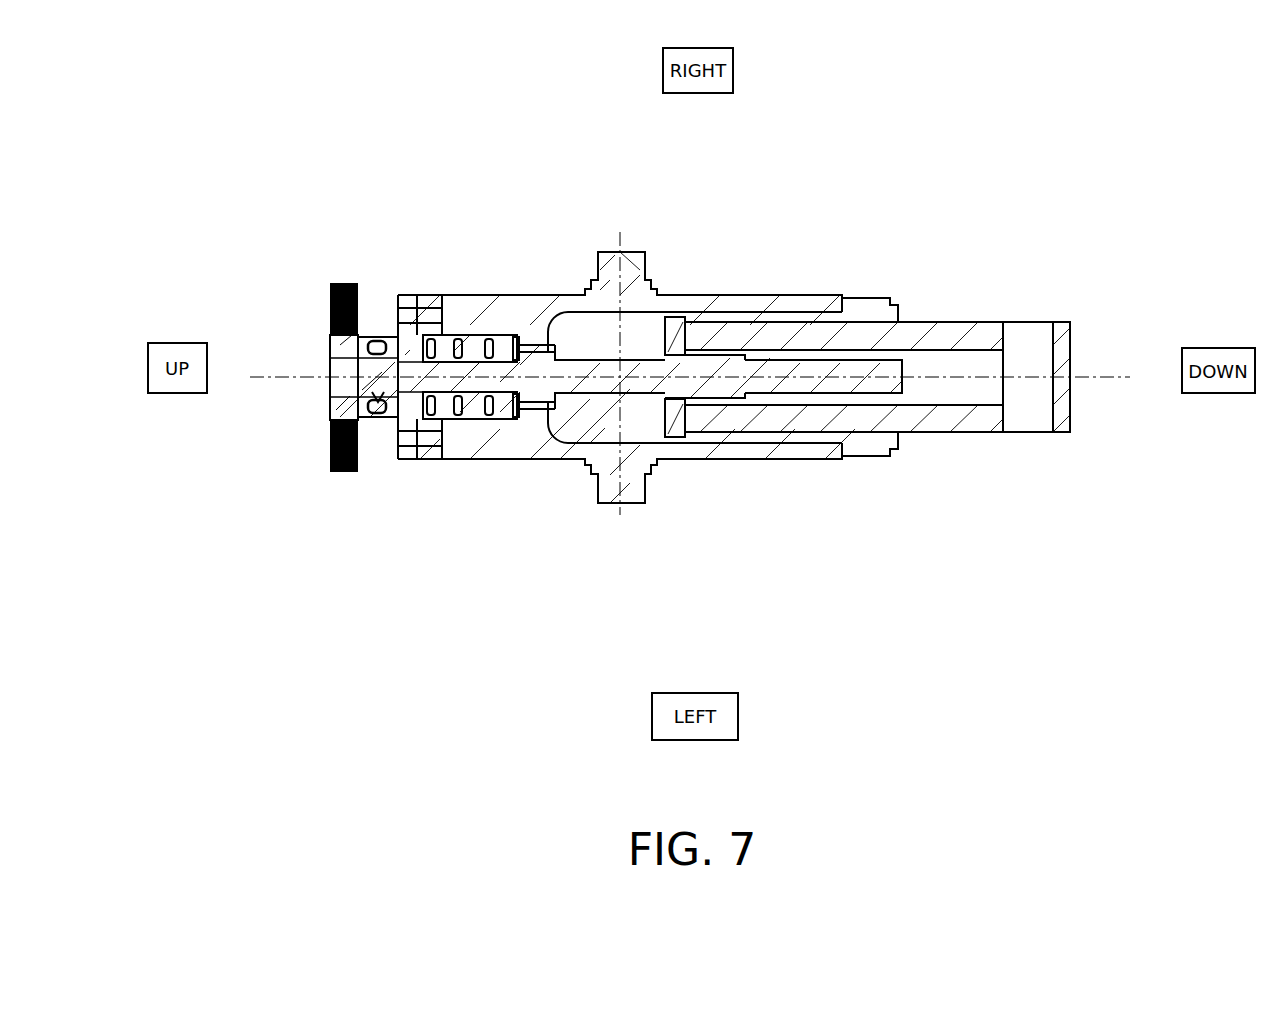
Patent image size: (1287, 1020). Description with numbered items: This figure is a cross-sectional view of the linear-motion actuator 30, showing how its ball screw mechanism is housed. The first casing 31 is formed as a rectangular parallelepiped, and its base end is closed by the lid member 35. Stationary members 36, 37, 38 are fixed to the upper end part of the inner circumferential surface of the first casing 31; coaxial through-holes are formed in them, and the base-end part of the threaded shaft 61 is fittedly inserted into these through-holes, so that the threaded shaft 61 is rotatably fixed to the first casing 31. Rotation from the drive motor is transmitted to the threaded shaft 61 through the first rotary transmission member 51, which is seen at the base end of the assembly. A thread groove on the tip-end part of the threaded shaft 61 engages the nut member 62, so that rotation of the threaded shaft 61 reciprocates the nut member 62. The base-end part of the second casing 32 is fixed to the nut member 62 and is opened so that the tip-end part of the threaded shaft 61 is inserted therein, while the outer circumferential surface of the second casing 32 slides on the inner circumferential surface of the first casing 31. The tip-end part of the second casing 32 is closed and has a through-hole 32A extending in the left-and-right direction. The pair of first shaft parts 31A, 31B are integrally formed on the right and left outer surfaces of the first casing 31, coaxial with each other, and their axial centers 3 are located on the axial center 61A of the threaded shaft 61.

The linear-motion actuator 30 is at (691, 22).
The first rotary transmission member 51 is at (345, 283).
The lid member 35 is at (412, 295).
The stationary member 36 is at (450, 295).
The stationary member 37 is at (478, 295).
The stationary member 38 is at (505, 295).
The first casing 31 is at (626, 378).
The axial center 3 is at (616, 312).
The first shaft part 31A is at (631, 252).
The first shaft part 31B is at (618, 505).
The nut member 62 is at (675, 296).
The axial center 61A is at (743, 357).
The threaded shaft 61 is at (621, 274).
The second casing 32 is at (877, 294).
The through-hole 32A is at (1026, 352).